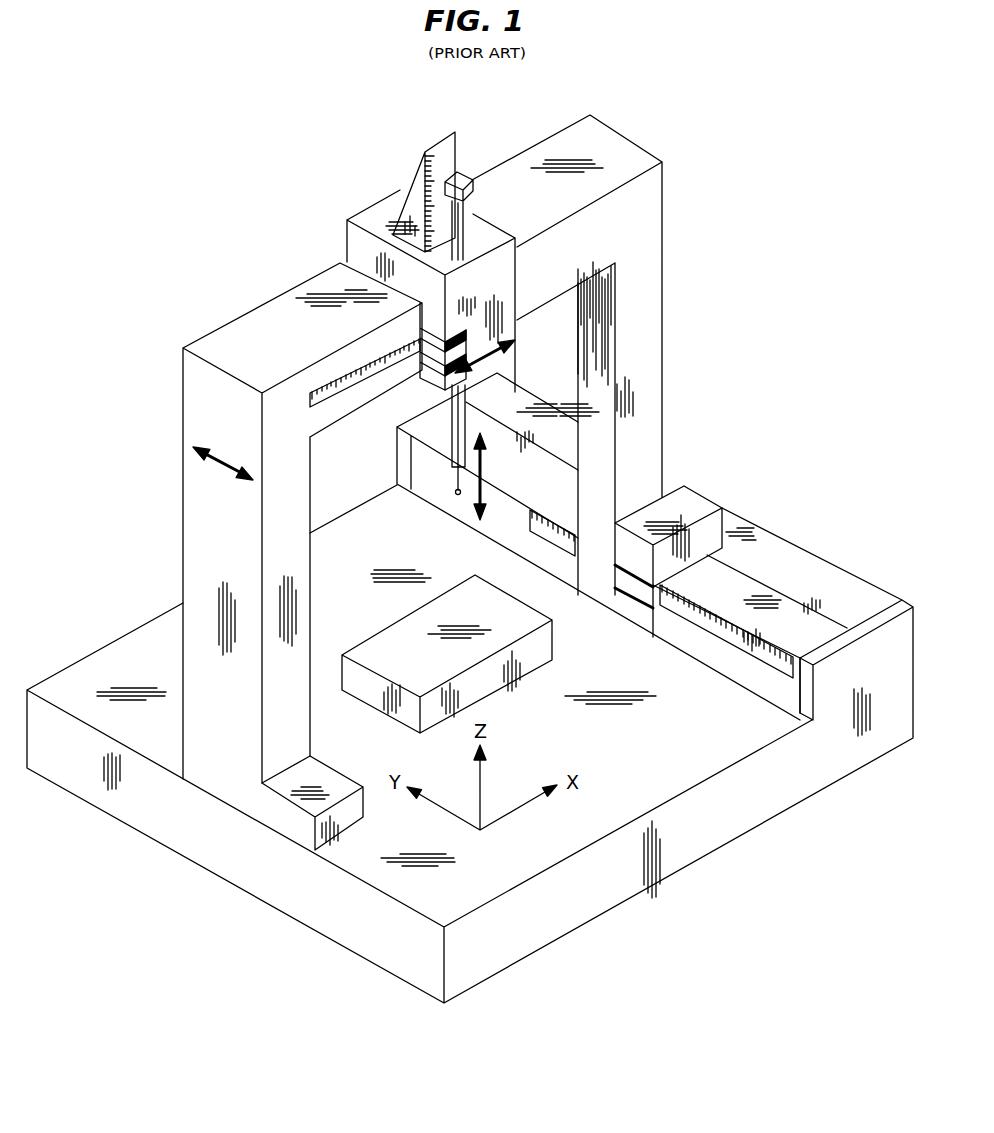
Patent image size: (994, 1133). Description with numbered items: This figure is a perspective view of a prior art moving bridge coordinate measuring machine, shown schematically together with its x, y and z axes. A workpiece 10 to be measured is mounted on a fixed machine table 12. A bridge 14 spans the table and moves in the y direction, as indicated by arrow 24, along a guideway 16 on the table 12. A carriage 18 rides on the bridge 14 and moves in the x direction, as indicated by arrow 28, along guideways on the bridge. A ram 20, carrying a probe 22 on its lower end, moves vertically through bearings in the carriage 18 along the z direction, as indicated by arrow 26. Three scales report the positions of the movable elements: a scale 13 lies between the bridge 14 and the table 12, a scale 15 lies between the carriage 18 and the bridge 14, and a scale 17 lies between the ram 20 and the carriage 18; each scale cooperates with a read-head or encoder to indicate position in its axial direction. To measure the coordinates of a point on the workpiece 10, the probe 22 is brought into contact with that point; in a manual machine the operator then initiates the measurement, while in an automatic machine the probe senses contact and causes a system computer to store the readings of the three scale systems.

The workpiece 10 is at (380, 702).
The machine table 12 is at (485, 863).
The scale 13 is at (760, 653).
The bridge 14 is at (628, 152).
The scale 15 is at (344, 382).
The guideway 16 is at (785, 592).
The scale 17 is at (430, 152).
The carriage 18 is at (367, 218).
The ram 20 is at (452, 437).
The probe 22 is at (455, 493).
The arrow 24 is at (222, 468).
The arrow 26 is at (483, 463).
The arrow 28 is at (482, 353).